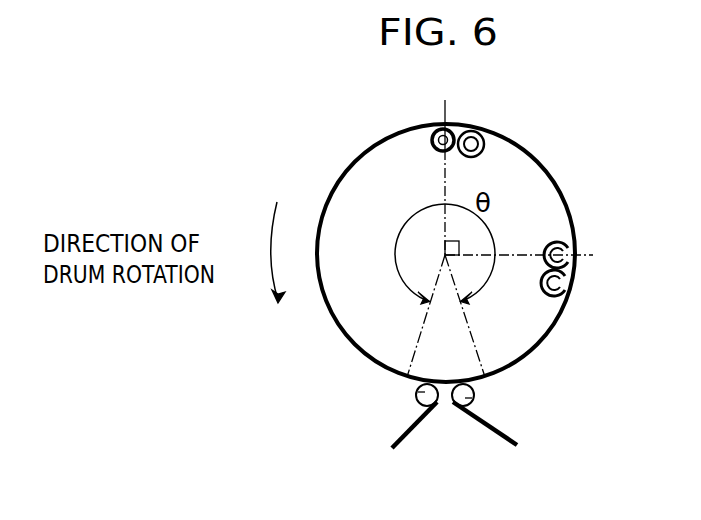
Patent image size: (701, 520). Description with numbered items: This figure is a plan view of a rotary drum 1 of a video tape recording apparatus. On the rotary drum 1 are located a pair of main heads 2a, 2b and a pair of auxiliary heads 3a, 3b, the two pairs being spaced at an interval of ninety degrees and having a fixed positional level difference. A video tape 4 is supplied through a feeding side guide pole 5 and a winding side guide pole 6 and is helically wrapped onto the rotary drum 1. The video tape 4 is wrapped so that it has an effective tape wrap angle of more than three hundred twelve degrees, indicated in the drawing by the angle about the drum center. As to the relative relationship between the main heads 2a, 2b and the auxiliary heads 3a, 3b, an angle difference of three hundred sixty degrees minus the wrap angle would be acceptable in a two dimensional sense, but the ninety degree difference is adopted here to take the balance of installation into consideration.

The rotary drum 1 is at (352, 177).
The main head 2a is at (432, 130).
The main head 2b is at (498, 137).
The auxiliary head 3a is at (572, 235).
The auxiliary head 3b is at (563, 303).
The video tape 4 is at (408, 433).
The feeding side guide pole 5 is at (477, 398).
The winding side guide pole 6 is at (415, 396).